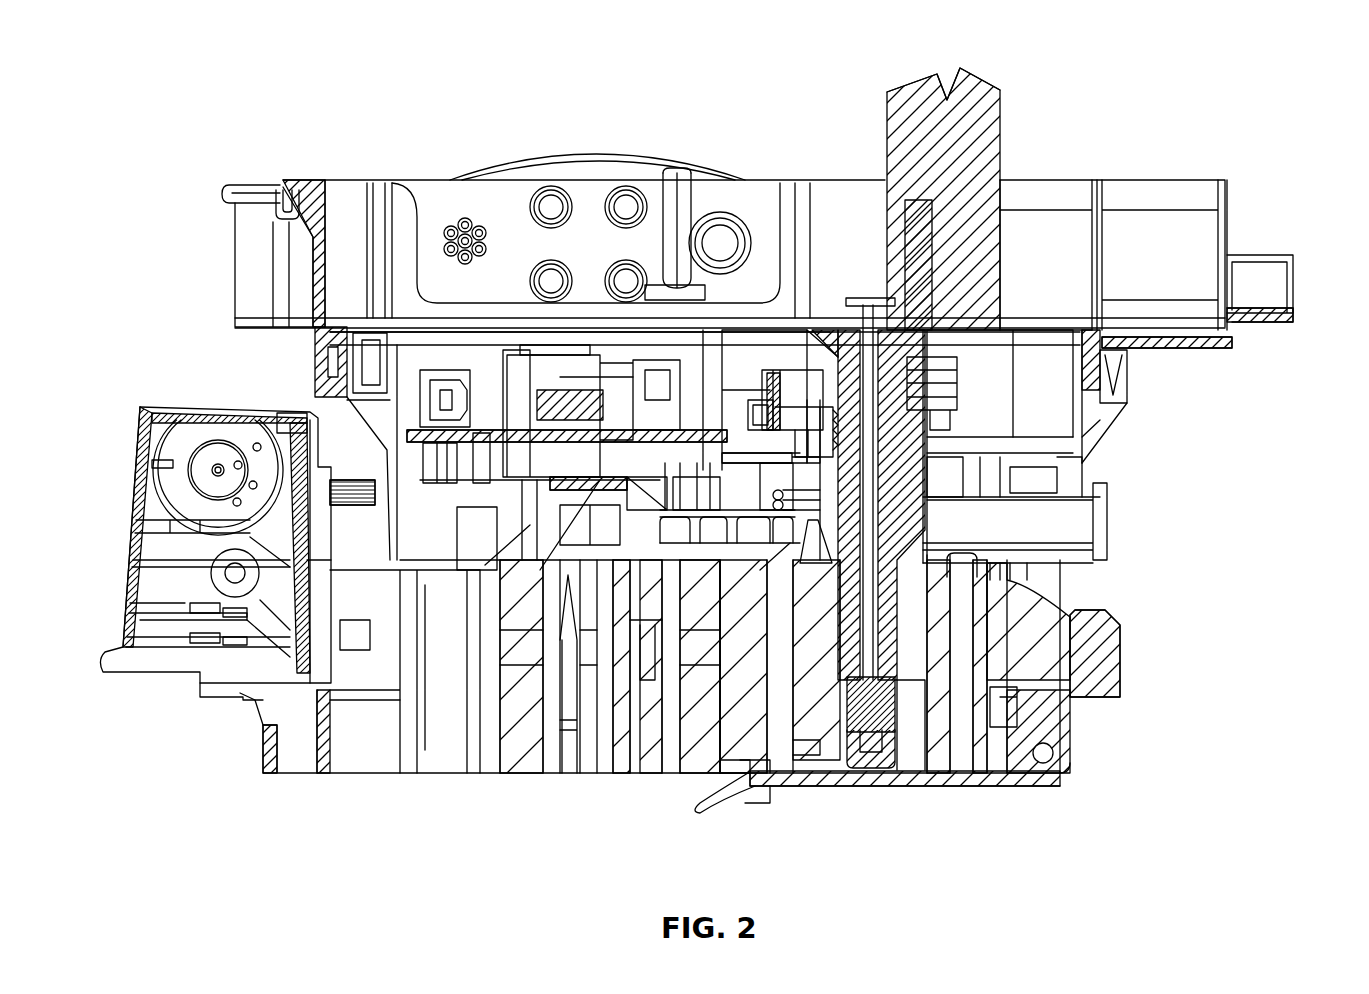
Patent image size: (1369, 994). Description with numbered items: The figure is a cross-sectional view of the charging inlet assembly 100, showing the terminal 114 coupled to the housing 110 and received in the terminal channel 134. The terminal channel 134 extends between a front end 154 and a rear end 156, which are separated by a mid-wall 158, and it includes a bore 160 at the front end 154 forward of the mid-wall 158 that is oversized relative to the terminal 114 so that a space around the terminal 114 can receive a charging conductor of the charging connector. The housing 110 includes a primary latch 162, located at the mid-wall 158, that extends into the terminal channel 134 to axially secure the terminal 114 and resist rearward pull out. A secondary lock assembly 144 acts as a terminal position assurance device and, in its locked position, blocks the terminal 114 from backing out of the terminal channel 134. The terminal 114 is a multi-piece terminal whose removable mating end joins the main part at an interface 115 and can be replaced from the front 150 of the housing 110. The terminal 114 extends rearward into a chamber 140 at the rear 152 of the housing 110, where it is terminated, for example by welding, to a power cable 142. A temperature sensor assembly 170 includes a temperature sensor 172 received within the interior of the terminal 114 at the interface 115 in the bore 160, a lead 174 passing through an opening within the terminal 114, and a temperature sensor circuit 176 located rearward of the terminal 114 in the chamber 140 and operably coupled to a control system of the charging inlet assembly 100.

The charging inlet assembly 100 is at (536, 52).
The housing 110 is at (490, 773).
The terminal 114 is at (845, 700).
The interface 115 is at (846, 679).
The terminal channel 134 is at (910, 742).
The chamber 140 is at (1046, 360).
The power cable 142 is at (960, 110).
The secondary lock assembly 144 is at (962, 384).
The front 150 is at (590, 773).
The rear 152 is at (1278, 305).
The front end 154 is at (938, 775).
The rear end 156 is at (820, 405).
The mid-wall 158 is at (910, 560).
The bore 160 is at (908, 676).
The primary latch 162 is at (828, 540).
The temperature sensor assembly 170 is at (886, 298).
The temperature sensor 172 is at (890, 683).
The lead 174 is at (832, 395).
The temperature sensor circuit 176 is at (868, 292).